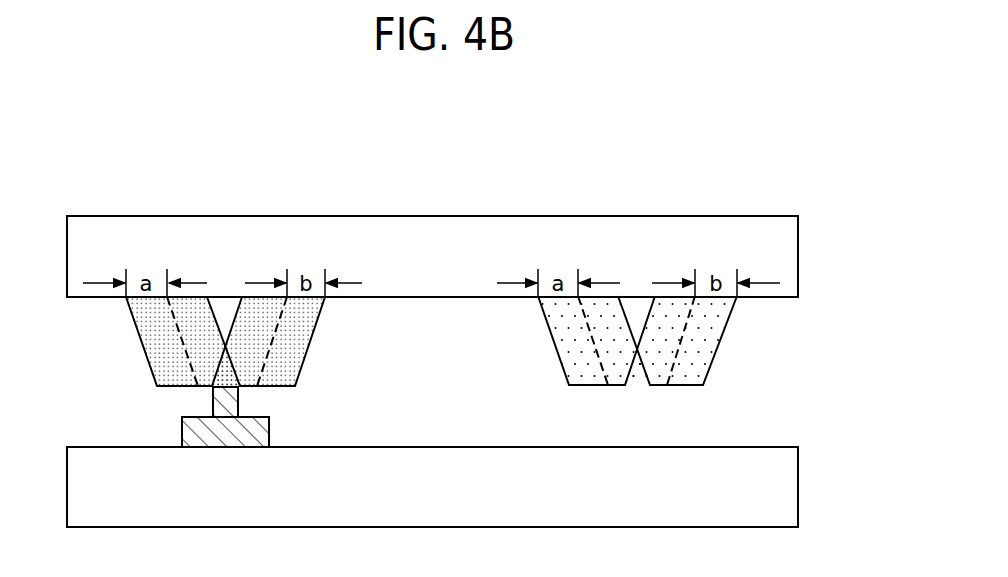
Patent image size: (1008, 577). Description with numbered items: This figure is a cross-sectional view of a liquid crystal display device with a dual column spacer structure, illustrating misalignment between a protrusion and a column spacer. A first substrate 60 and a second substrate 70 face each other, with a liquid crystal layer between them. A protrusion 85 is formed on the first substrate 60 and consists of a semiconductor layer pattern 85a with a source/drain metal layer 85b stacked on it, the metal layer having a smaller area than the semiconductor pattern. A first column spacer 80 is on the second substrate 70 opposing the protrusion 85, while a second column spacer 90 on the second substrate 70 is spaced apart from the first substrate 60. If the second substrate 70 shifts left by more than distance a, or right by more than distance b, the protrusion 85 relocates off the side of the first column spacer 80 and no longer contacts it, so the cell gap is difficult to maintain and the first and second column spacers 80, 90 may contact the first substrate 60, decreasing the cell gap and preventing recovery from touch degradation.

The first substrate 60 is at (783, 489).
The second substrate 70 is at (783, 253).
The first column spacer 80 is at (308, 337).
The protrusion 85 is at (294, 418).
The semiconductor layer pattern 85a is at (272, 436).
The source/drain metal layer 85b is at (247, 401).
The second column spacer 90 is at (713, 336).